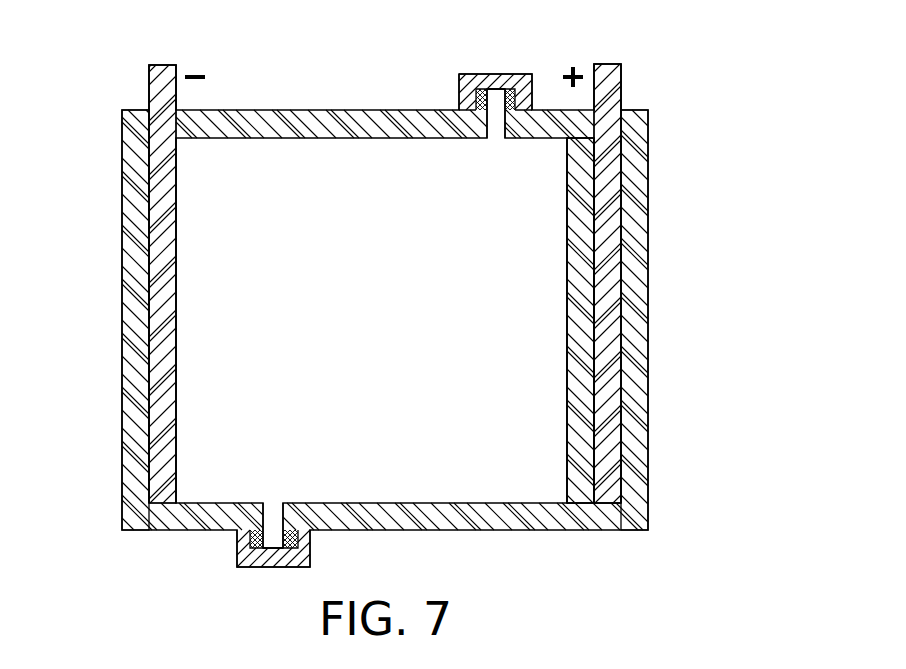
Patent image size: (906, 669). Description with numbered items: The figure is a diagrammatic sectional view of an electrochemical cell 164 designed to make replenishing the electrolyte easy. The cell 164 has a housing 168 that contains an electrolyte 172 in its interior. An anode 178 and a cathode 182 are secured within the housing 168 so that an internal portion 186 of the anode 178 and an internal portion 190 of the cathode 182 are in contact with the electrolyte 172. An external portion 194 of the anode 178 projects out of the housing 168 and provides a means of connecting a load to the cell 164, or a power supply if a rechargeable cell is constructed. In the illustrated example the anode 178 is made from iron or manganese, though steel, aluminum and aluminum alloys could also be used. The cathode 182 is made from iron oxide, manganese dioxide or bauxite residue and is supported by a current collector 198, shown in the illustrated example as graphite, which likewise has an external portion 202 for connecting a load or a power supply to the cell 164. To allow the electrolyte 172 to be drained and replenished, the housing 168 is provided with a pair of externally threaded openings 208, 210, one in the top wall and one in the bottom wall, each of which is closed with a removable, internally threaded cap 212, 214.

The cell 164 is at (790, 144).
The housing 168 is at (634, 303).
The electrolyte 172 is at (401, 329).
The anode 178 is at (165, 263).
The cathode 182 is at (580, 382).
The internal portion 186 is at (163, 337).
The internal portion 190 is at (580, 458).
The external portion 194 is at (147, 83).
The current collector 198 is at (608, 170).
The external portion 202 is at (622, 82).
The externally threaded opening 208 is at (492, 143).
The externally threaded opening 210 is at (272, 516).
The internally threaded cap 212 is at (488, 73).
The internally threaded cap 214 is at (310, 548).